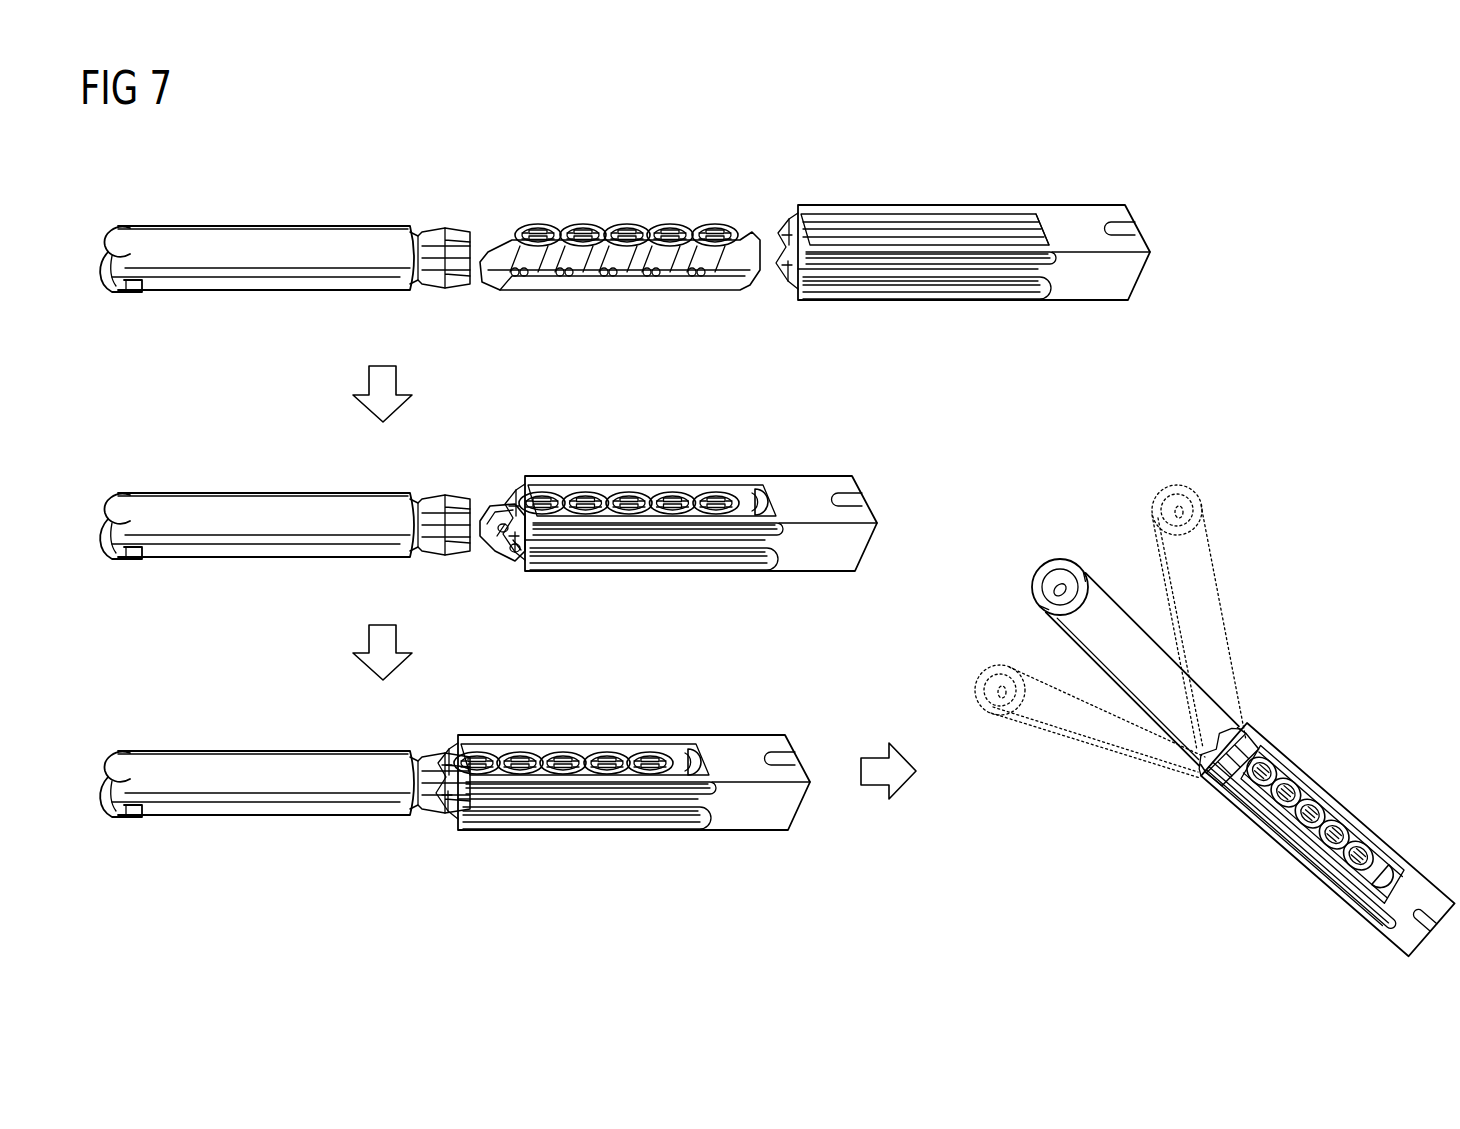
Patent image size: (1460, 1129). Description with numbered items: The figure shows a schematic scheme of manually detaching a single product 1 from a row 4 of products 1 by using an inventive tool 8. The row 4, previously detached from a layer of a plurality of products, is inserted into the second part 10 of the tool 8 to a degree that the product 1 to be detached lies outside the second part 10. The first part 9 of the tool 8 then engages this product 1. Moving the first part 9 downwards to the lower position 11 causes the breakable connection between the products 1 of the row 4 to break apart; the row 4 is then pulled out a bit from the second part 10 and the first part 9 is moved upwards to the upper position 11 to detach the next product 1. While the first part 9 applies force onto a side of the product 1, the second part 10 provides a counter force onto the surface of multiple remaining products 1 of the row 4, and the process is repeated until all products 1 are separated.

The product 1 is at (553, 272).
The row of products 4 is at (671, 190).
The tool 8 is at (241, 196).
The first part of the tool 9 is at (300, 228).
The second part of the tool 10 is at (1070, 215).
The lower position / upper position 11 is at (1180, 485).